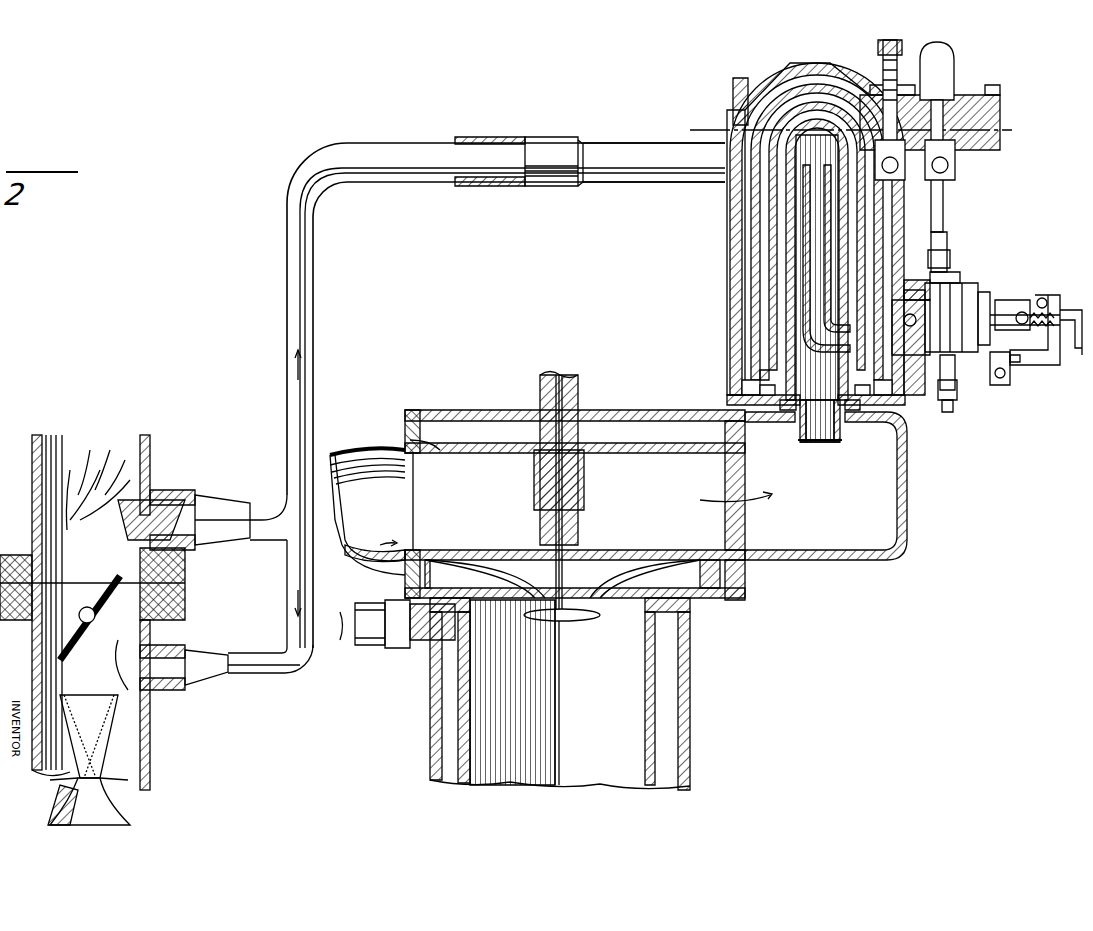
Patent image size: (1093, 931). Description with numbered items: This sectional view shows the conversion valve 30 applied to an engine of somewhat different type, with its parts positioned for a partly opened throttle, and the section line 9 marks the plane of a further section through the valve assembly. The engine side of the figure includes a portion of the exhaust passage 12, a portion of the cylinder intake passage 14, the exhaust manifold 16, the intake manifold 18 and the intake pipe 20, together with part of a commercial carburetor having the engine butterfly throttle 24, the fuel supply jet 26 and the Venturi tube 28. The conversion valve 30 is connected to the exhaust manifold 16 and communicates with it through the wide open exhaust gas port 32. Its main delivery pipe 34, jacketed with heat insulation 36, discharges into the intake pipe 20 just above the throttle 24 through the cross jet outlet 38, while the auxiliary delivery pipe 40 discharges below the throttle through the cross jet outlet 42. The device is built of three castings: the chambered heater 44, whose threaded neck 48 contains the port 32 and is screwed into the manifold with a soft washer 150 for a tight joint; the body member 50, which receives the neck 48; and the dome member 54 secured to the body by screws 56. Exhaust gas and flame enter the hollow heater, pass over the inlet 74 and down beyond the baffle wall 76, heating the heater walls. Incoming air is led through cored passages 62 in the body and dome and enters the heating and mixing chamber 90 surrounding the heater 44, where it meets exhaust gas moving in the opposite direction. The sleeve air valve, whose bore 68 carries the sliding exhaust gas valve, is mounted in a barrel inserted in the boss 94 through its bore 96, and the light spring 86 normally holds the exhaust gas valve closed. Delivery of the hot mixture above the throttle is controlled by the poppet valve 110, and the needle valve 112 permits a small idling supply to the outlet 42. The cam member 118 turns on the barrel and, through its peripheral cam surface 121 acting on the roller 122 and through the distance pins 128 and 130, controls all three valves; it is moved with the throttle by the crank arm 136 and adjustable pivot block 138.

The section line 9 is at (700, 128).
The exhaust passage 12 is at (740, 575).
The cylinder intake passage 14 is at (410, 455).
The exhaust manifold 16 is at (885, 483).
The intake manifold 18 is at (360, 548).
The intake pipe 20 is at (150, 455).
The engine butterfly throttle 24 is at (150, 622).
The fuel supply jet 26 is at (62, 795).
The Venturi tube 28 is at (115, 760).
The conversion valve 30 is at (775, 235).
The exhaust gas port 32 is at (842, 432).
The main delivery pipe 34 is at (625, 172).
The heat insulation jacket 36 is at (470, 186).
The cross jet outlet 38 is at (165, 492).
The auxiliary delivery pipe 40 is at (290, 556).
The cross jet outlet 42 is at (150, 690).
The chambered heater 44 is at (790, 245).
The threaded neck 48 is at (800, 432).
The body member 50 is at (765, 378).
The dome member 54 is at (780, 82).
The screws 56 is at (740, 80).
The cored passages 62 is at (745, 185).
The bore 68 is at (905, 290).
The inlet 74 is at (838, 150).
The baffle wall 76 is at (825, 258).
The spring 86 is at (1046, 325).
The heating and mixing chamber 90 is at (760, 212).
The boss 94 is at (760, 390).
The bore 96 is at (917, 342).
The poppet valve 110 is at (955, 100).
The needle valve 112 is at (880, 80).
The cam member 118 is at (960, 285).
The peripheral cam surface 121 is at (950, 278).
The roller 122 is at (948, 262).
The distance pin 128 is at (1000, 310).
The distance pin 130 is at (1012, 365).
The crank arm 136 is at (953, 408).
The adjustable pivot block 138 is at (957, 394).
The soft washer 150 is at (860, 407).